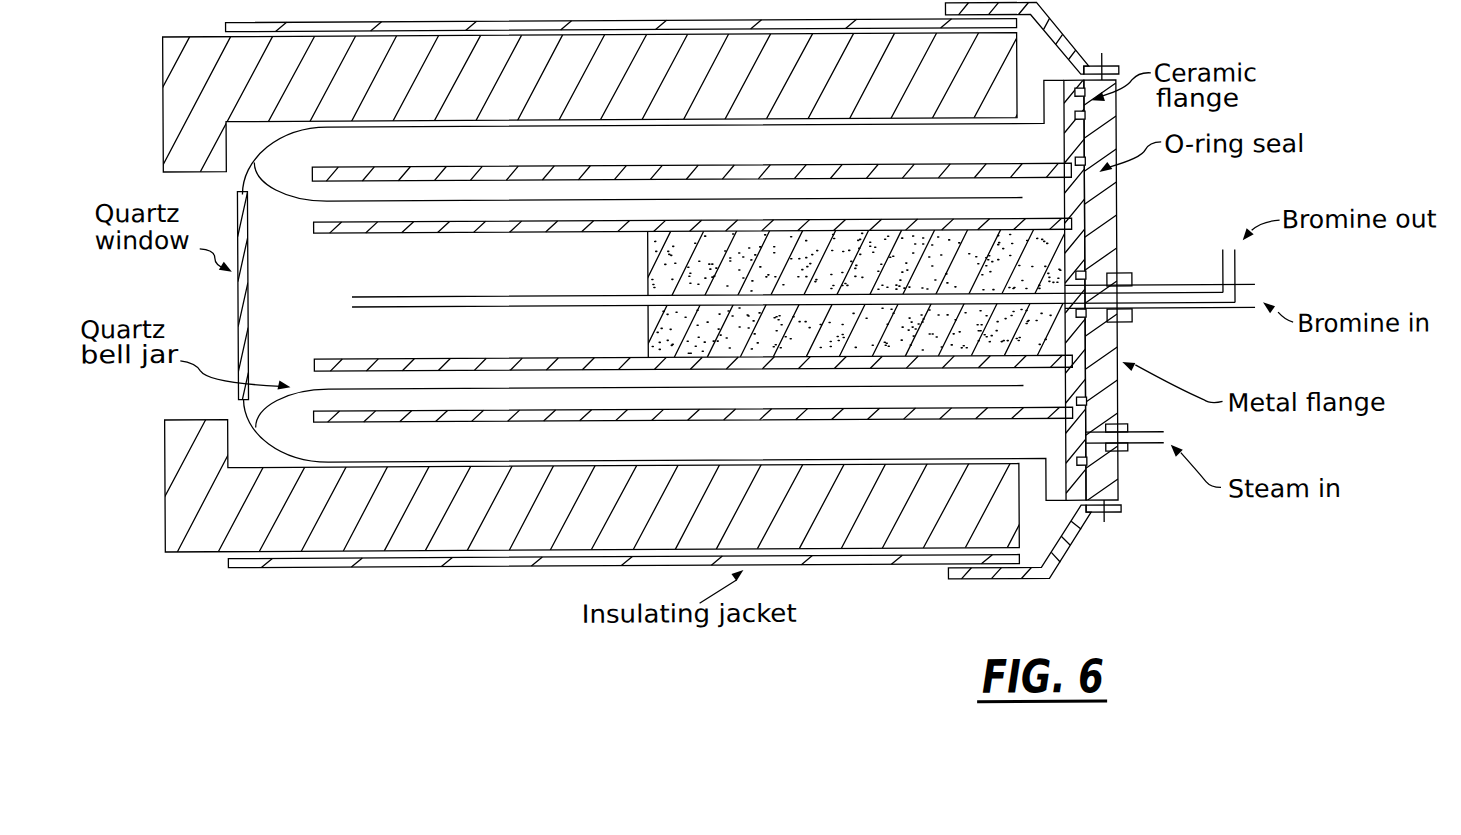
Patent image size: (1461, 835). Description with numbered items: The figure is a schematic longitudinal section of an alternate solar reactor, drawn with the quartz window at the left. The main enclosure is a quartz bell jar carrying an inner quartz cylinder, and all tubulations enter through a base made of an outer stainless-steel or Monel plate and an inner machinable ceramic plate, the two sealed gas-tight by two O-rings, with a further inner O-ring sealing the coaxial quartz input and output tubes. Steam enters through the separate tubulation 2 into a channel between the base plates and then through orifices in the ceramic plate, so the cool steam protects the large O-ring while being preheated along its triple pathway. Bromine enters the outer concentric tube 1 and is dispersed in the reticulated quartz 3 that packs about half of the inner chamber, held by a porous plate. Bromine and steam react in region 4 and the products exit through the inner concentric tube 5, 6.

The outer concentric tube 1 is at (1178, 285).
The steam input tubulation 2 is at (1129, 452).
The reticulated quartz packing 3 is at (851, 275).
The reaction region 4 is at (487, 280).
The inner concentric tube 5 is at (332, 301).
The inner concentric tube outlet 6 is at (1224, 255).